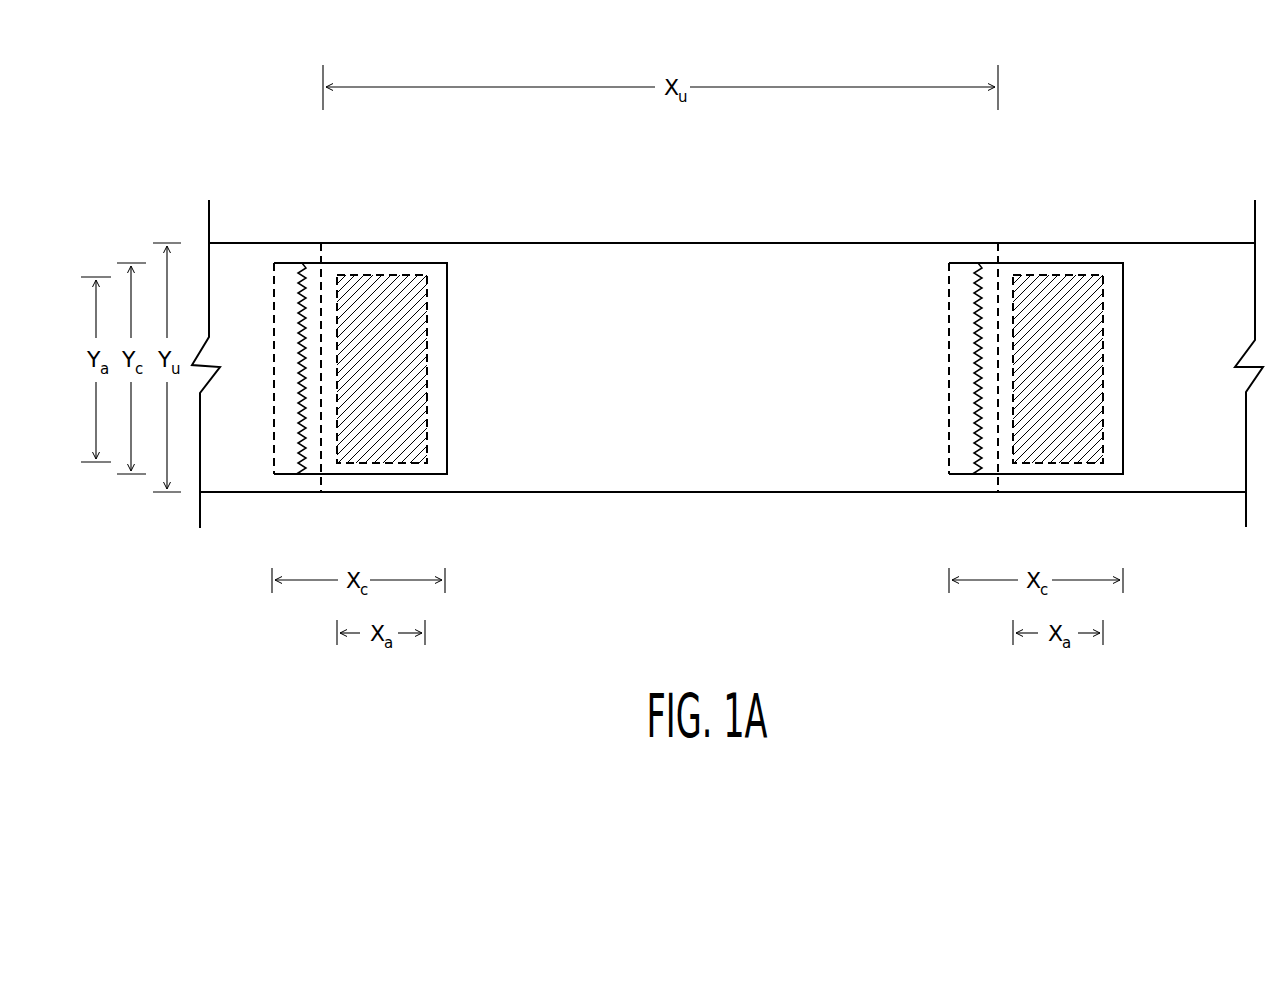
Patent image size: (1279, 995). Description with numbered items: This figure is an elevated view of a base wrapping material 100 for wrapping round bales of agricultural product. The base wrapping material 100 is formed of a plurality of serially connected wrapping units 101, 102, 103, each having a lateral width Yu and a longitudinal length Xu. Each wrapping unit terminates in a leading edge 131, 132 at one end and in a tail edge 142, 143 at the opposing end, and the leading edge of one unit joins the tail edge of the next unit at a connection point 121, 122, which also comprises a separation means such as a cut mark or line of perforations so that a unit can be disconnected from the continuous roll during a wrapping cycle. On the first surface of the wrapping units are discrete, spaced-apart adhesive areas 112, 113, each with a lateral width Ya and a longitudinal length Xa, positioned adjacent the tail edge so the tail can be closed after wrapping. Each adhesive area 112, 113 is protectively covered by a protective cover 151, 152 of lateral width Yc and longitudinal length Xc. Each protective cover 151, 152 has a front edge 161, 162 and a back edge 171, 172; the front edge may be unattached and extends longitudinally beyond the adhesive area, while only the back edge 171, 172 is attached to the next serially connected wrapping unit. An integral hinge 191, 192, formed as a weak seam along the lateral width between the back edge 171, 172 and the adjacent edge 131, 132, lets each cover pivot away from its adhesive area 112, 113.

The base wrapping material 100 is at (207, 155).
The wrapping unit 101 is at (249, 268).
The wrapping unit 102 is at (705, 265).
The wrapping unit 103 is at (1173, 267).
The adhesive area 112 is at (390, 307).
The adhesive area 113 is at (1063, 292).
The connection point 121 is at (321, 243).
The connection point 122 is at (998, 243).
The leading edge 131 is at (313, 427).
The leading edge 132 is at (993, 423).
The tail edge 142 is at (328, 413).
The tail edge 143 is at (1002, 415).
The protective cover 151 is at (459, 445).
The protective cover 152 is at (1135, 447).
The front edge 161 is at (449, 330).
The front edge 162 is at (1125, 330).
The back edge 171 is at (274, 313).
The back edge 172 is at (947, 313).
The integral hinge 191 is at (298, 264).
The integral hinge 192 is at (978, 262).